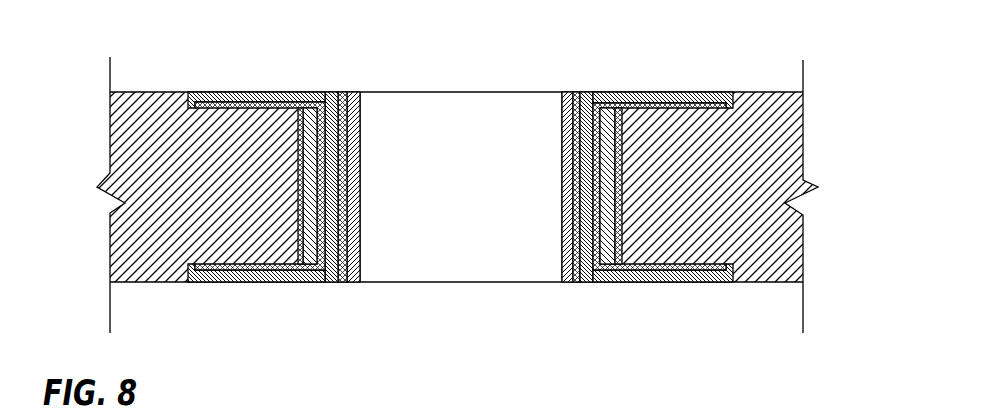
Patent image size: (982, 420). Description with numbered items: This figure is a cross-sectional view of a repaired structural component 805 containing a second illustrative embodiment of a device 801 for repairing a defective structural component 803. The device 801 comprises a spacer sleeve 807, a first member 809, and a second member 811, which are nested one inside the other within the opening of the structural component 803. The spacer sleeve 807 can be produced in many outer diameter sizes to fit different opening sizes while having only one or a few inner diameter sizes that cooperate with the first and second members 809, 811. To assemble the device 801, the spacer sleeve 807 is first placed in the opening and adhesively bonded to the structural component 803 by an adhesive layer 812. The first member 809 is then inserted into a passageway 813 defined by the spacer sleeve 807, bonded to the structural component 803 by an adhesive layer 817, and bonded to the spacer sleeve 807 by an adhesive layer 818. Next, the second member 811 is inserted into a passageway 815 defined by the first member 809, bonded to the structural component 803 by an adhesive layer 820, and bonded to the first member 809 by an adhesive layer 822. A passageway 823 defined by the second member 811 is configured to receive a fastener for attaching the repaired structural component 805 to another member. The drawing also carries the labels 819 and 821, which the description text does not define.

The device 801 is at (505, 311).
The defective structural component 803 is at (773, 92).
The repaired structural component 805 is at (754, 324).
The spacer sleeve 807 is at (612, 165).
The first member 809 is at (603, 293).
The second member 811 is at (338, 80).
The adhesive layer 812 is at (627, 152).
The passageway 813 is at (575, 150).
The passageway 815 is at (570, 147).
The adhesive layer 817 is at (207, 267).
The adhesive layer 818 is at (355, 160).
The inner layers 819 is at (297, 282).
The adhesive layer 820 is at (224, 92).
The liner layer 821 is at (272, 92).
The adhesive layer 822 is at (350, 140).
The passageway 823 is at (447, 265).